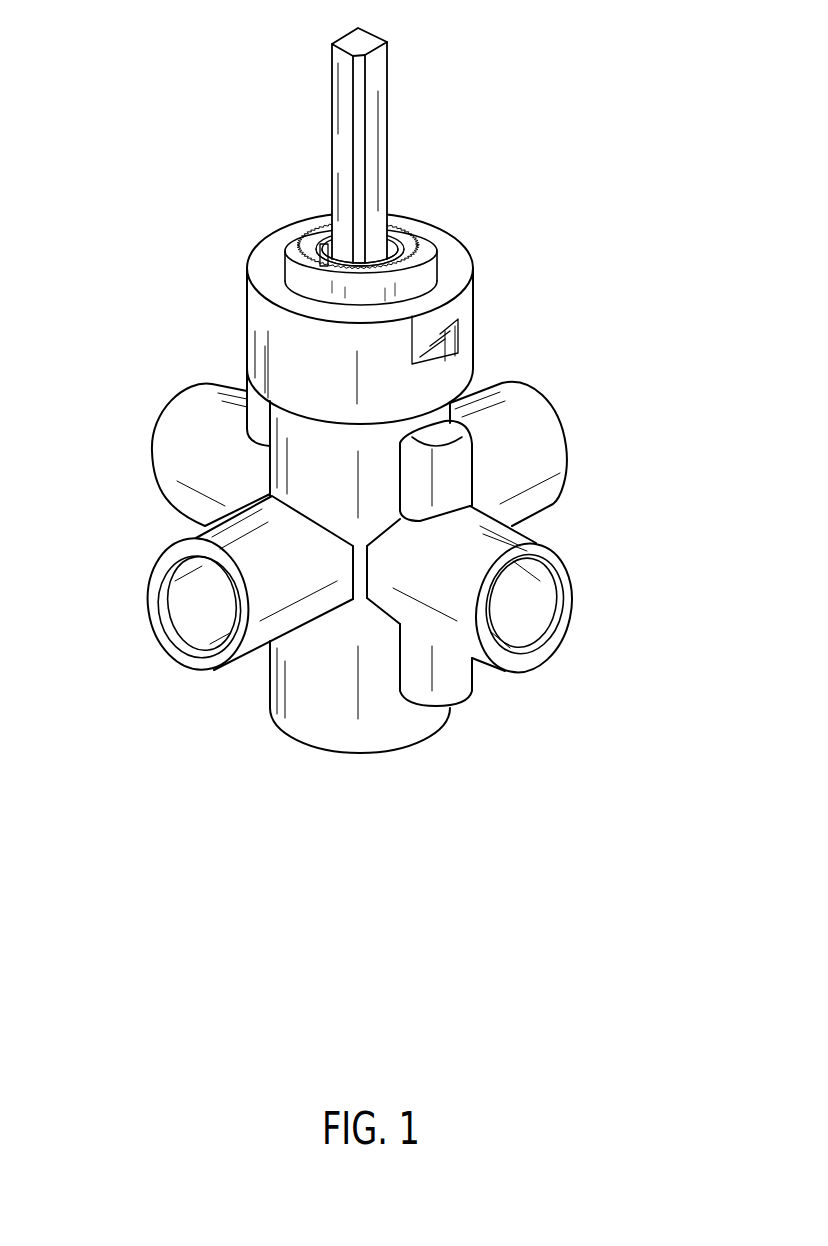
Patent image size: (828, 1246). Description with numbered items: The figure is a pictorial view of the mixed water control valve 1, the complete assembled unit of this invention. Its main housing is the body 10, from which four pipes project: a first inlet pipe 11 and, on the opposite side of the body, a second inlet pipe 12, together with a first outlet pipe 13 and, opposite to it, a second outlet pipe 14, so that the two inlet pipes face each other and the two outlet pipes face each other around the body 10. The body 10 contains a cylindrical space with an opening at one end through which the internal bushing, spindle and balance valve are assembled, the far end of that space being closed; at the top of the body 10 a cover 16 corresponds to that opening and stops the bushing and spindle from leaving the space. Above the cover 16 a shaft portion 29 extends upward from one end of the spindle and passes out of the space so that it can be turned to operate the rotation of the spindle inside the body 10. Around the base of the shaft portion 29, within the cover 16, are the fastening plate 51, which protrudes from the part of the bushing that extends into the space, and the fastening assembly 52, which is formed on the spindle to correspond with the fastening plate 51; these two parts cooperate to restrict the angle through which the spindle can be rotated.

The mixed water control valve 1 is at (379, 430).
The body 10 is at (366, 742).
The first inlet pipe 11 is at (178, 396).
The second inlet pipe 12 is at (532, 600).
The first outlet pipe 13 is at (185, 591).
The second outlet pipe 14 is at (555, 408).
The cover 16 is at (455, 272).
The valve stem 29 is at (373, 77).
The fastening plate 51 is at (308, 220).
The fastening assembly 52 is at (427, 220).